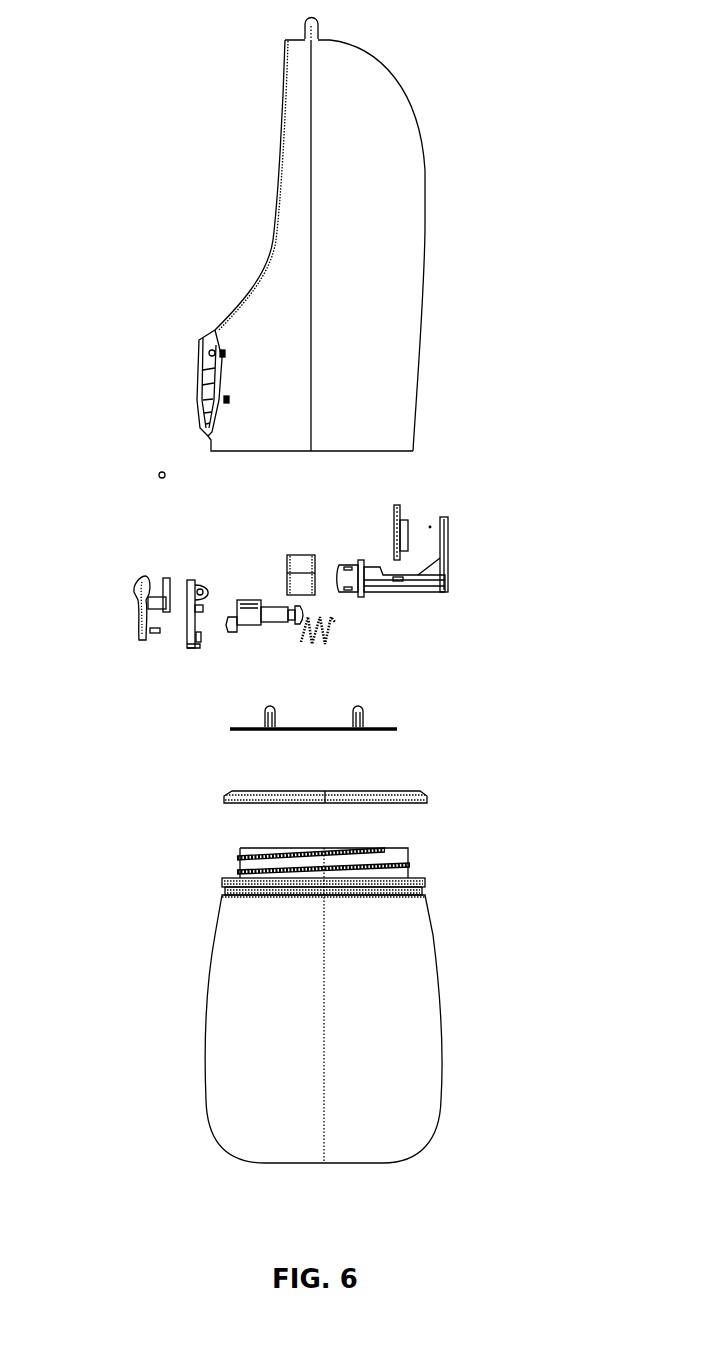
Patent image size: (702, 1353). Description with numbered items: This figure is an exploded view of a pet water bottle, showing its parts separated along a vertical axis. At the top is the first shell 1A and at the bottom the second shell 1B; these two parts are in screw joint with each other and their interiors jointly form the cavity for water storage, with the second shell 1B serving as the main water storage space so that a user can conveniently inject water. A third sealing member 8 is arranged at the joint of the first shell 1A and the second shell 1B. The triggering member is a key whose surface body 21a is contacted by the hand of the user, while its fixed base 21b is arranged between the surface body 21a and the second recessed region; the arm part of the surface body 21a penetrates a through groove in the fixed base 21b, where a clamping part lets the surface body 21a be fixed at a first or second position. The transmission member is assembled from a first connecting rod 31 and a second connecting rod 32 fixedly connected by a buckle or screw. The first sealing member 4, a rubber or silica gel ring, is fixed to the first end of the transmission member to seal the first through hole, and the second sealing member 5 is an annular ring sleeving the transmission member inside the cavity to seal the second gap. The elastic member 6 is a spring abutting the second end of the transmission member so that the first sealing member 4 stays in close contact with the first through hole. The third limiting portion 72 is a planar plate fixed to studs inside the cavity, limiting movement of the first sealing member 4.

The first shell 1A is at (340, 282).
The second shell 1B is at (390, 1065).
The first sealing member 4 is at (403, 510).
The second sealing member 5 is at (300, 558).
The elastic member 6 is at (330, 622).
The third sealing member 8 is at (422, 793).
The surface body 21a is at (135, 633).
The fixed base 21b is at (188, 648).
The first connecting rod 31 is at (260, 603).
The second connecting rod 32 is at (436, 577).
The third limiting portion 72 is at (397, 727).